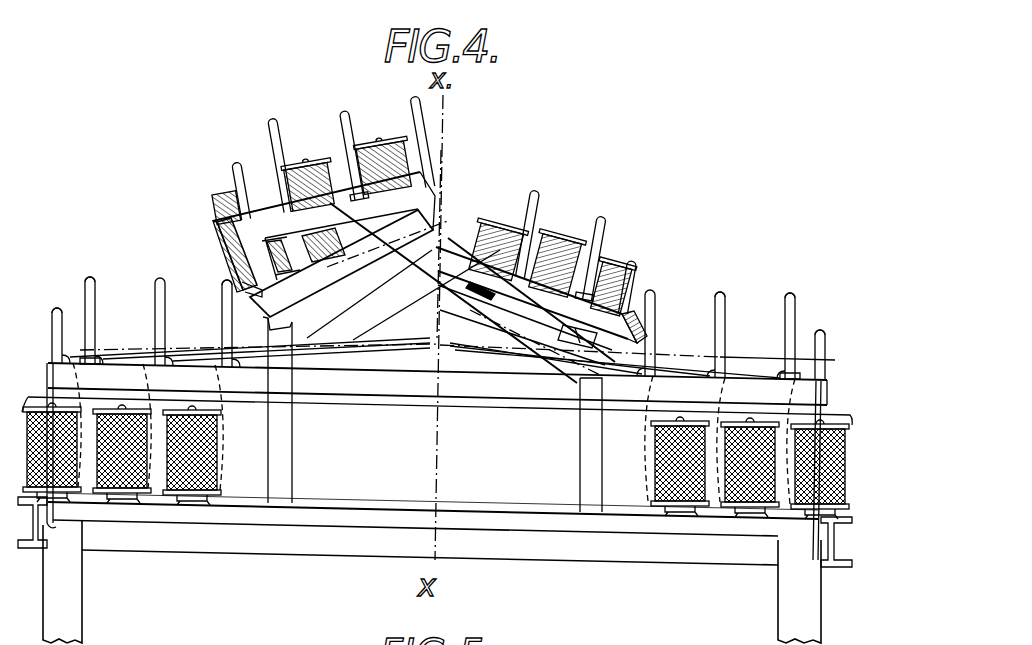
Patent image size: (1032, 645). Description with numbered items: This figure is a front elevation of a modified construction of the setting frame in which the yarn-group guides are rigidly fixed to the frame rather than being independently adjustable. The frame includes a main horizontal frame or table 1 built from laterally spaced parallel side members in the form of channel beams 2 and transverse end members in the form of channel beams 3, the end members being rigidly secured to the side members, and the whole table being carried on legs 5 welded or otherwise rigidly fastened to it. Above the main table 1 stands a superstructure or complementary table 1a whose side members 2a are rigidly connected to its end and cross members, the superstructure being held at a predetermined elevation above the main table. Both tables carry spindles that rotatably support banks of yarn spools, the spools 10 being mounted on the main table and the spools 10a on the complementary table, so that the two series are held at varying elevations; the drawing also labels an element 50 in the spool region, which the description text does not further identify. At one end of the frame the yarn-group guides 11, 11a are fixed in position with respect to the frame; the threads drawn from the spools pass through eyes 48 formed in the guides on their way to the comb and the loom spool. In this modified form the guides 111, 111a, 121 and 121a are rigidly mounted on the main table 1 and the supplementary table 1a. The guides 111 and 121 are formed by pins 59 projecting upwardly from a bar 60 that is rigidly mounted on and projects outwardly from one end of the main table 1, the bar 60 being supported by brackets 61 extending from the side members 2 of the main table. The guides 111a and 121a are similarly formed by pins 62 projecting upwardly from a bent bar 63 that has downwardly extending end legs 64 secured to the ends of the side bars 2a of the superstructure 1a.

The main horizontal frame or table 1 is at (327, 508).
The superstructure or complementary table 1a is at (488, 179).
The side member channel beam 2 is at (27, 547).
The side member of superstructure 2a is at (240, 292).
The end member channel beam 3 is at (563, 557).
The leg 5 is at (70, 617).
The yarn spool 10 is at (228, 400).
The yarn spool 10a is at (403, 137).
The yarn-group guide 11 is at (640, 405).
The yarn-group guide 11a is at (615, 238).
The guide eye 48 is at (70, 327).
The coil 50 is at (213, 217).
The pin 59 is at (92, 295).
The bar 60 is at (379, 388).
The bracket 61 is at (52, 526).
The pin 62 is at (265, 130).
The bent bar 63 is at (222, 210).
The end leg 64 is at (350, 297).
The guide 111 is at (180, 270).
The guide 111a is at (350, 93).
The guide 121 is at (840, 276).
The guide 121a is at (682, 198).